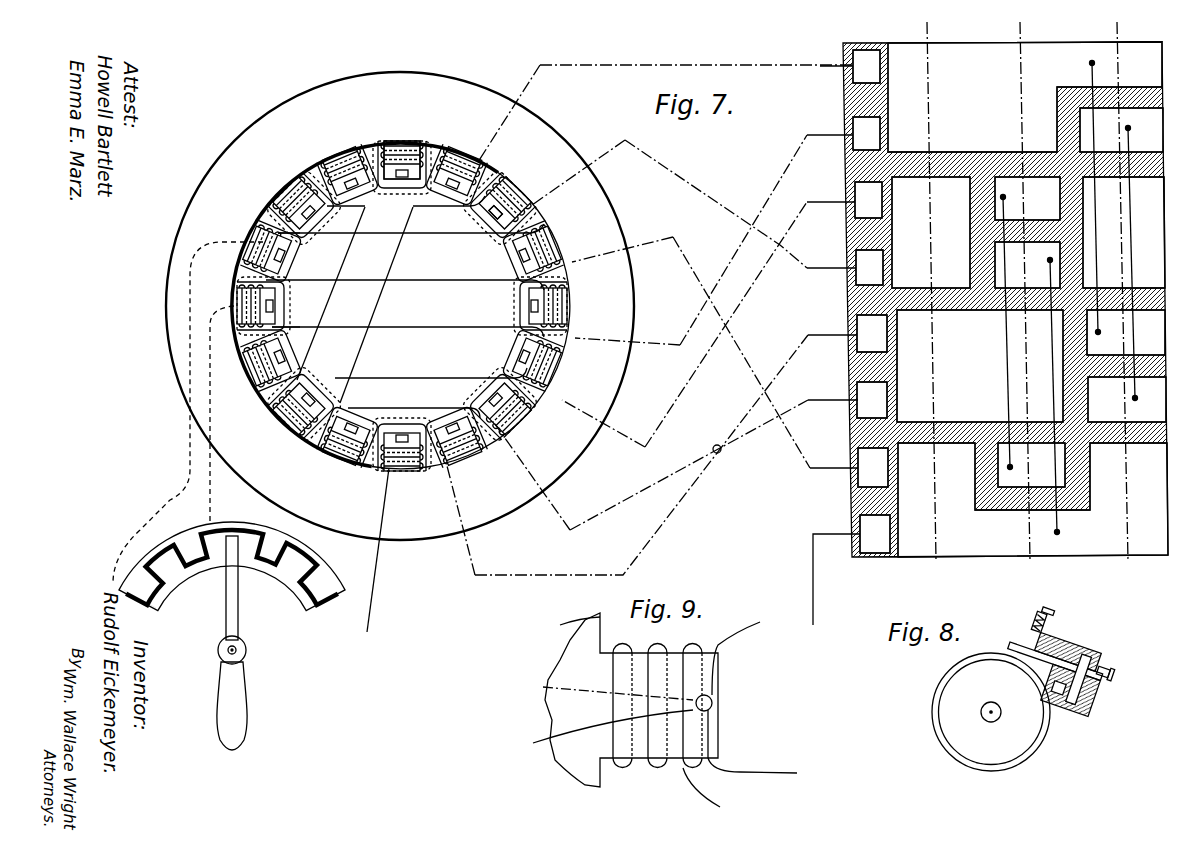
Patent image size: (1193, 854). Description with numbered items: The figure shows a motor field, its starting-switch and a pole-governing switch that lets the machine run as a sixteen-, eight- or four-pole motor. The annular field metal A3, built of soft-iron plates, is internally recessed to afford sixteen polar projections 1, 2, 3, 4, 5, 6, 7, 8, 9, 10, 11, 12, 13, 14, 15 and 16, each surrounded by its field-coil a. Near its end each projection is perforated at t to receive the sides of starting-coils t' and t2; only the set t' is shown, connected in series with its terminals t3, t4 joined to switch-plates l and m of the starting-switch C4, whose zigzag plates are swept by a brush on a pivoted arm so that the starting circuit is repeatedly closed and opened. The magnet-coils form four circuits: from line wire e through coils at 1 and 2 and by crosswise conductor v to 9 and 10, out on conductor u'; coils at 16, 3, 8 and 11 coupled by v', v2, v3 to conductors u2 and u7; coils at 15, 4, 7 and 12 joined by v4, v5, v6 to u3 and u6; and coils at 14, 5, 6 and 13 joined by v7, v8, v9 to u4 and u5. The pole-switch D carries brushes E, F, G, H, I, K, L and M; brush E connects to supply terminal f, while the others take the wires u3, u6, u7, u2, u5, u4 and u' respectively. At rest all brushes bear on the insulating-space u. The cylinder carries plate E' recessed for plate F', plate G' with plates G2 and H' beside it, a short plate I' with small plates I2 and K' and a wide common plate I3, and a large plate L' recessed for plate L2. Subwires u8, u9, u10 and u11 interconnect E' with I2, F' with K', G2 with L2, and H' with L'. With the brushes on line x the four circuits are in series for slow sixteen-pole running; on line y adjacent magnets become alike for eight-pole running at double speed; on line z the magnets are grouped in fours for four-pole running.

In FIG. 7, the polar projection 1 is at (402, 439).
In FIG. 7, the polar projection 2 is at (348, 437).
In FIG. 7, the polar projection 3 is at (304, 404).
In FIG. 7, the polar projection 4 is at (271, 360).
In FIG. 7, the polar projection 5 is at (263, 306).
In FIG. 7, the polar projection 6 is at (271, 252).
In FIG. 7, the polar projection 7 is at (304, 208).
In FIG. 7, the polar projection 8 is at (348, 175).
In FIG. 7, the polar projection 9 is at (402, 172).
In FIG. 7, the polar projection 10 is at (456, 175).
In FIG. 7, the polar projection 11 is at (500, 208).
In FIG. 7, the polar projection 12 is at (532, 252).
In FIG. 7, the polar projection 13 is at (536, 306).
In FIG. 7, the polar projection 14 is at (532, 360).
In FIG. 7, the polar projection 15 is at (500, 404).
In FIG. 7, the polar projection 16 is at (456, 436).
In FIG. 7, the field-coil a is at (395, 150).
In FIG. 9, the field-coil a is at (666, 726).
In FIG. 9, the perforation t is at (714, 725).
In FIG. 7, the starting-coil t' is at (447, 334).
In FIG. 9, the starting-coil t' is at (730, 658).
In FIG. 9, the starting-coil t2 is at (752, 763).
In FIG. 7, the circuit terminal t3 is at (222, 415).
In FIG. 7, the circuit terminal t4 is at (188, 412).
In FIG. 7, the feeding or line wire e is at (378, 550).
In FIG. 7, the switch-plate l is at (232, 567).
In FIG. 7, the switch-plate m is at (155, 609).
In FIG. 7, the starting-switch C4 is at (232, 636).
In FIG. 7, the annular field metal A3 is at (400, 306).
In FIG. 9, the annular field metal A3 is at (625, 700).
In FIG. 7, the crosswise conductor v is at (376, 305).
In FIG. 7, the crosswise conductor v' is at (414, 405).
In FIG. 7, the crosswise conductor v2 is at (331, 293).
In FIG. 7, the crosswise conductor v3 is at (426, 208).
In FIG. 7, the connecting wire v4 is at (431, 368).
In FIG. 7, the connecting wire v5 is at (292, 310).
In FIG. 7, the connecting wire v6 is at (420, 236).
In FIG. 7, the connecting wire v7 is at (408, 324).
In FIG. 7, the connecting wire v8 is at (293, 244).
In FIG. 7, the connecting wire v9 is at (405, 277).
In FIG. 7, the insulating-space u is at (836, 154).
In FIG. 7, the pole-switch conductor u' is at (665, 113).
In FIG. 7, the switching-conductor u2 is at (694, 204).
In FIG. 7, the switching-conductor u3 is at (715, 352).
In FIG. 7, the switching-conductor u4 is at (714, 240).
In FIG. 7, the switching-conductor u5 is at (708, 324).
In FIG. 7, the switching-conductor u6 is at (676, 465).
In FIG. 7, the switching-conductor u7 is at (651, 455).
In FIG. 7, the subwire u8 is at (1048, 396).
In FIG. 7, the subwire u9 is at (1001, 332).
In FIG. 7, the subwire u10 is at (1141, 263).
In FIG. 7, the subwire u11 is at (1105, 198).
In FIG. 7, the switch position line x is at (923, 288).
In FIG. 7, the switch position line y is at (1016, 287).
In FIG. 7, the switch position line z is at (1120, 287).
In FIG. 7, the pole-switch D is at (1013, 299).
In FIG. 8, the pole-switch D is at (991, 712).
In FIG. 7, the brush E is at (875, 534).
In FIG. 7, the brush F is at (873, 467).
In FIG. 7, the brush G is at (872, 400).
In FIG. 7, the brush H is at (872, 333).
In FIG. 7, the brush I is at (869, 267).
In FIG. 7, the brush K is at (868, 200).
In FIG. 7, the brush L is at (866, 133).
In FIG. 7, the brush M is at (866, 66).
In FIG. 7, the contact-plate E' is at (1033, 500).
In FIG. 7, the contact-plate F' is at (1031, 465).
In FIG. 7, the contact-plate G' is at (980, 366).
In FIG. 7, the contact-plate H' is at (1126, 332).
In FIG. 7, the contact-plate I' is at (931, 232).
In FIG. 7, the contact-plate K' is at (1027, 198).
In FIG. 7, the contact-plate L' is at (1025, 97).
In FIG. 7, the contact-plate G2 is at (1127, 399).
In FIG. 7, the contact-plate I2 is at (1027, 265).
In FIG. 7, the contact-plate L2 is at (1121, 130).
In FIG. 7, the contact-plate I3 is at (1124, 232).
In FIG. 7, the supply-wire terminal f is at (836, 579).